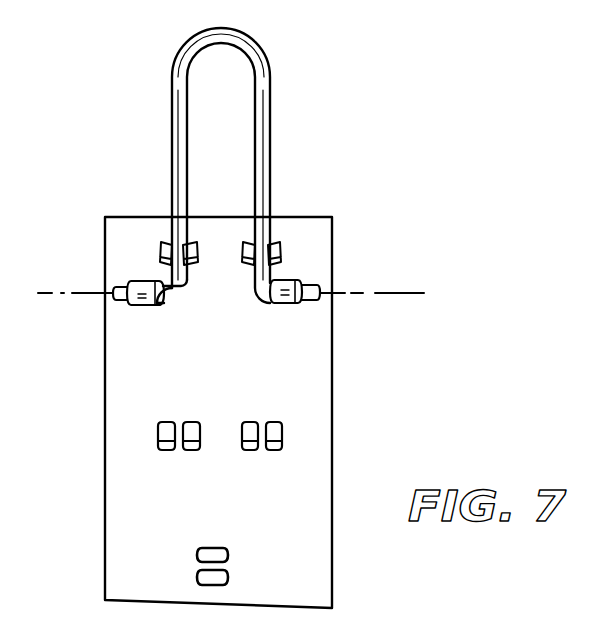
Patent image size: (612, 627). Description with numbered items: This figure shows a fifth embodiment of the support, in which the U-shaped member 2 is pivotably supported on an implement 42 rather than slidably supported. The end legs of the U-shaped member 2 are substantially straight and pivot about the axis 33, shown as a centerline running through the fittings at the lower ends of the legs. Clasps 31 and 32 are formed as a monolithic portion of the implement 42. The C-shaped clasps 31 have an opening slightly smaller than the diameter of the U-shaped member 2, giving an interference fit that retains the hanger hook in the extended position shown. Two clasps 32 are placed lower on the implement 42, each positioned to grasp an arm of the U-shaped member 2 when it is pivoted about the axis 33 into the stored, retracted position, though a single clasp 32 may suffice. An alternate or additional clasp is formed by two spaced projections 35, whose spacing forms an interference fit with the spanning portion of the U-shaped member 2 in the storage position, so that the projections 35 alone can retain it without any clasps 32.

The U-shaped member 2 is at (268, 145).
The clasps 31 is at (165, 243).
The second set of clasps 32 is at (148, 440).
The axis 33 is at (75, 298).
The spaced projections 35 is at (197, 552).
The implement 42 is at (317, 418).